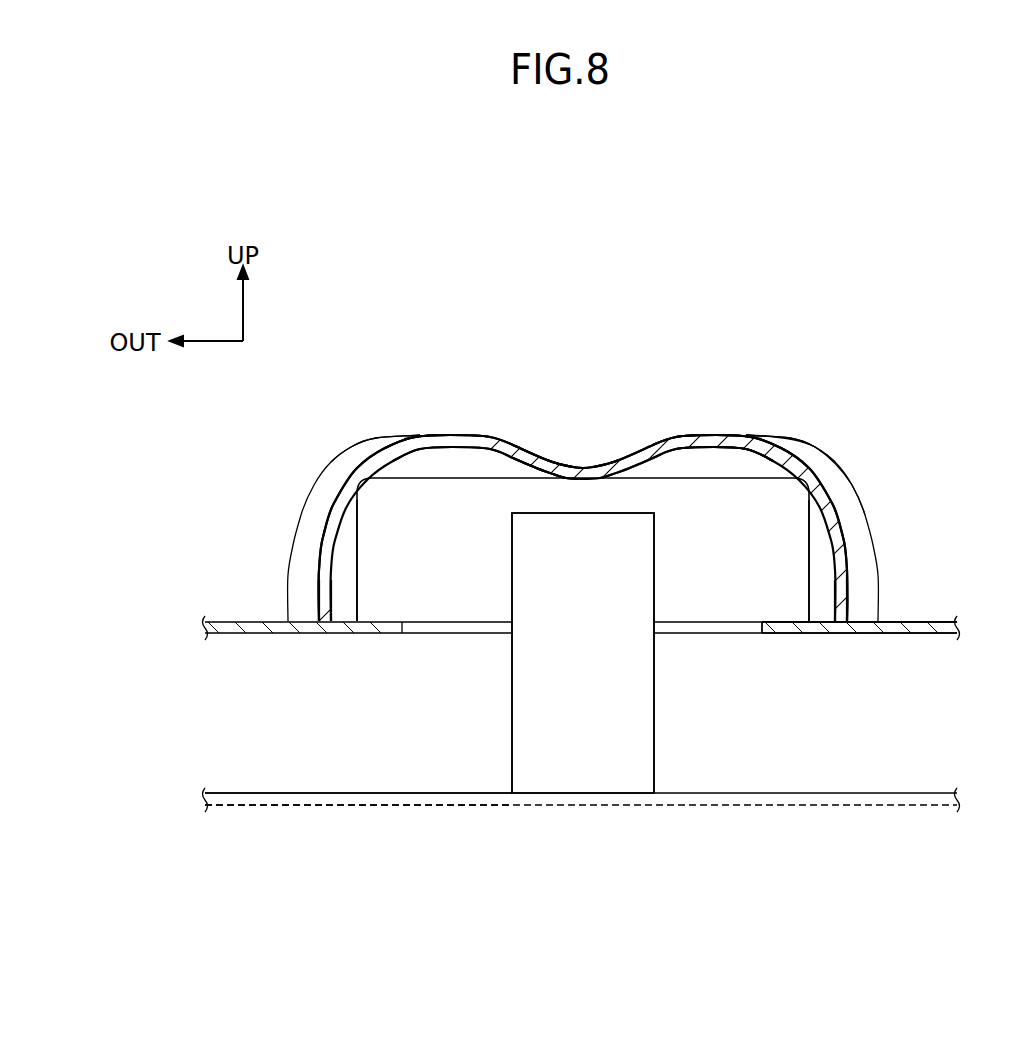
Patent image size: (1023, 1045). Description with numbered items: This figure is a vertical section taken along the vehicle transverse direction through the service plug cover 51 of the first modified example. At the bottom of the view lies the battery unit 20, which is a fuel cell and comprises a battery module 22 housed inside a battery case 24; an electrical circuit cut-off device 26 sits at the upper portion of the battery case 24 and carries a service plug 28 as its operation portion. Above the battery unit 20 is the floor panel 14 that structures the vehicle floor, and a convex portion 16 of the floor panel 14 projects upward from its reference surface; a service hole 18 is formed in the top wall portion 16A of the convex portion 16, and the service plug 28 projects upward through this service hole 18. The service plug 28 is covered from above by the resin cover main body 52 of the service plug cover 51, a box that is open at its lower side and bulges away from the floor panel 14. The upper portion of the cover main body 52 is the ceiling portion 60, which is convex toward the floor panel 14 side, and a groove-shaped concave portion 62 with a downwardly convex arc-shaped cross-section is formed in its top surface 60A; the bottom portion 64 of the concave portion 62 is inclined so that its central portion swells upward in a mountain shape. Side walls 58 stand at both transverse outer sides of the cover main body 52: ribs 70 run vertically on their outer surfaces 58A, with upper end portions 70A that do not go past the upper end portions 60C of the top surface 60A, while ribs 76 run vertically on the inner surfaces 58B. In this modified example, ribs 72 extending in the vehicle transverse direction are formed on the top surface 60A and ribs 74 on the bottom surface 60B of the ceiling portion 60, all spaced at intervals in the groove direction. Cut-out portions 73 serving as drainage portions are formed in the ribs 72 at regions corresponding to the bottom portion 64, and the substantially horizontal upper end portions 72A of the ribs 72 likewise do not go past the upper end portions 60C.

The floor panel 14 is at (960, 628).
The convex portion 16 is at (957, 621).
The top wall portion 16A is at (923, 620).
The service hole 18 is at (760, 634).
The battery unit 20 is at (942, 816).
The battery module 22 is at (290, 812).
The battery case 24 is at (252, 792).
The electrical circuit cut-off device 26 is at (491, 710).
The service plug 28 is at (655, 557).
The service plug cover 51 is at (773, 376).
The cover main body 52 is at (777, 423).
The side wall 58 is at (337, 500).
The outer surface 58A is at (326, 533).
The inner surface 58B is at (332, 595).
The ceiling portion 60 is at (717, 436).
The top surface 60A is at (681, 437).
The bottom surface 60B is at (740, 452).
The upper end portion 60C is at (420, 434).
The concave portion 62 is at (617, 469).
The bottom portion 64 is at (580, 466).
The rib 70 is at (288, 530).
The upper end portion 70A is at (372, 442).
The rib 72 is at (508, 444).
The upper end portion 72A is at (480, 436).
The cut-out portion 73 is at (560, 466).
The rib 74 is at (440, 480).
The rib 76 is at (357, 560).